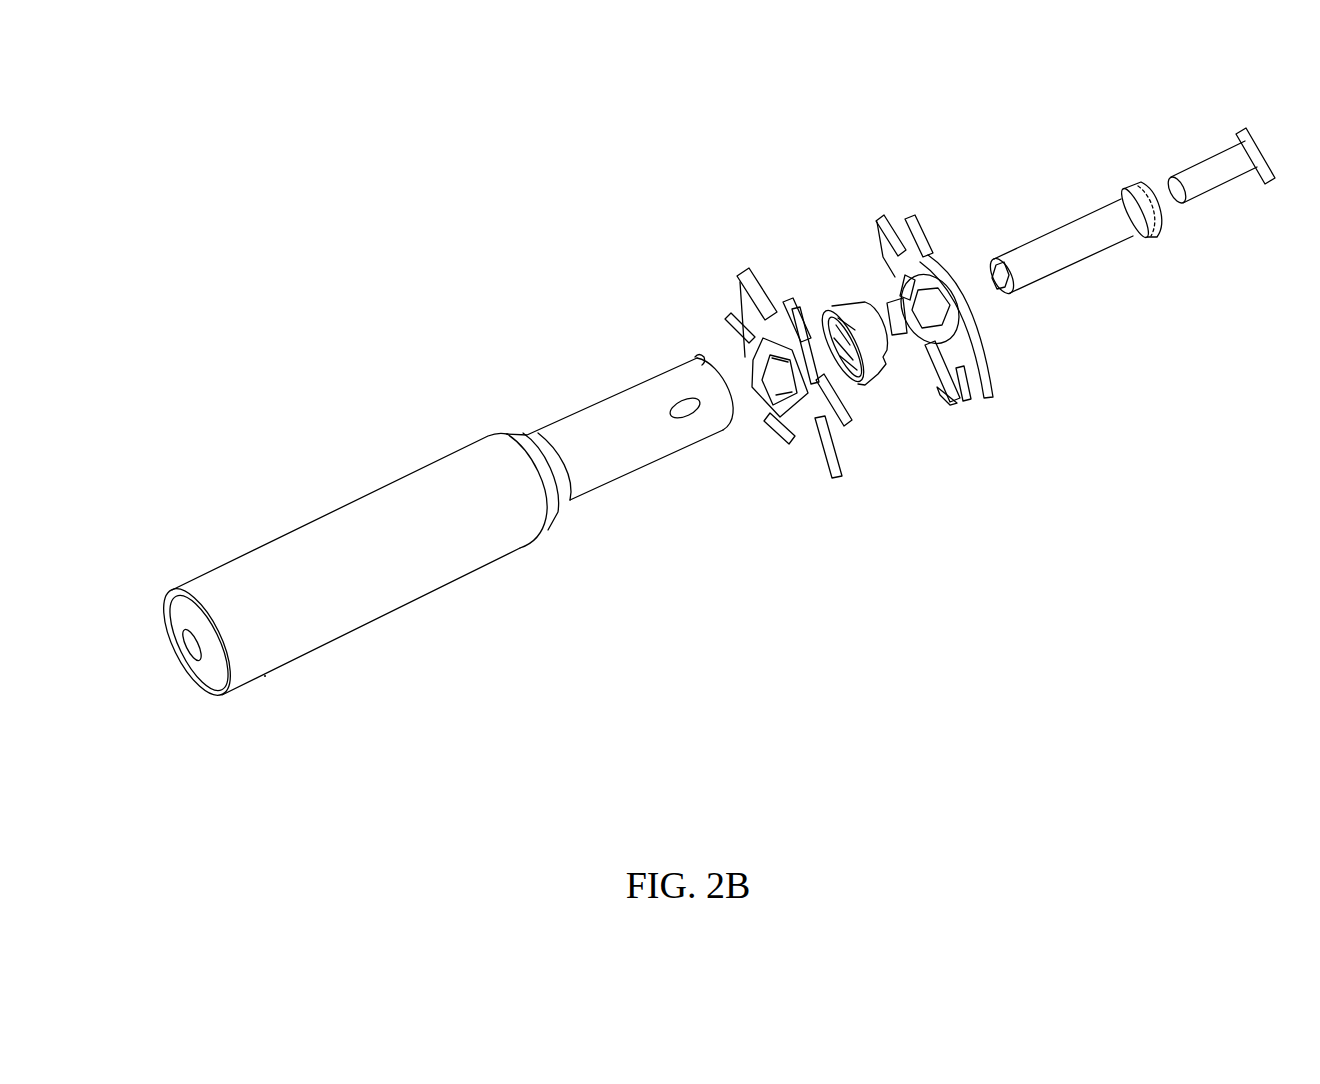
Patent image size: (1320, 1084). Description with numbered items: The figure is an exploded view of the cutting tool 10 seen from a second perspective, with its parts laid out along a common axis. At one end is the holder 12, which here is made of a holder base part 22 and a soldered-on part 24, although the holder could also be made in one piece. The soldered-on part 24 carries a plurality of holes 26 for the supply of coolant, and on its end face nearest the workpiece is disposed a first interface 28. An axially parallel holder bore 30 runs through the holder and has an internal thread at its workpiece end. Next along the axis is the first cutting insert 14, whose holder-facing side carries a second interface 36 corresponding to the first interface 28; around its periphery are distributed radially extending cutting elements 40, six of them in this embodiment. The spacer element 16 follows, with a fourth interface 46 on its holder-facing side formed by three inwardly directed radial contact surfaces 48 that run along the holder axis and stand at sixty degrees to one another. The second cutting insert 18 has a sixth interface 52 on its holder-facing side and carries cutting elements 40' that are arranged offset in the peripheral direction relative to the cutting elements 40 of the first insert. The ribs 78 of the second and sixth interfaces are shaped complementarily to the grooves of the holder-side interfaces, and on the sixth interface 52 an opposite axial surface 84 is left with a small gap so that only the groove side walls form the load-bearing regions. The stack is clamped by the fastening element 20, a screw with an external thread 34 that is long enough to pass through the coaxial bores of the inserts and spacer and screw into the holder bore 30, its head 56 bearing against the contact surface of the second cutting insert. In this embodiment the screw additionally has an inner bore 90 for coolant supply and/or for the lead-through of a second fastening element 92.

The cutting tool 10 is at (485, 199).
The holder 12 is at (410, 474).
The first cutting insert 14 is at (793, 308).
The spacer element 16 is at (886, 378).
The second cutting insert 18 is at (919, 221).
The fastening element 20 is at (1080, 216).
The holder base part 22 is at (406, 607).
The soldered-on part 24 is at (647, 467).
The holes 26 is at (680, 404).
The first interface 28 is at (700, 356).
The holder bore 30 is at (193, 650).
The external thread 34 is at (1052, 277).
The second interface 36 is at (804, 434).
The cutting elements 40 is at (864, 379).
The cutting elements 40' is at (876, 191).
The fourth interface 46 is at (858, 386).
The inwardly directed radial contact surfaces 48 is at (832, 306).
The sixth interface 52 is at (945, 342).
The head 56 is at (1153, 238).
The ribs 78 is at (903, 281).
The opposite axial surface 84 is at (933, 283).
The inner bore 90 is at (985, 268).
The second fastening element 92 is at (1215, 168).